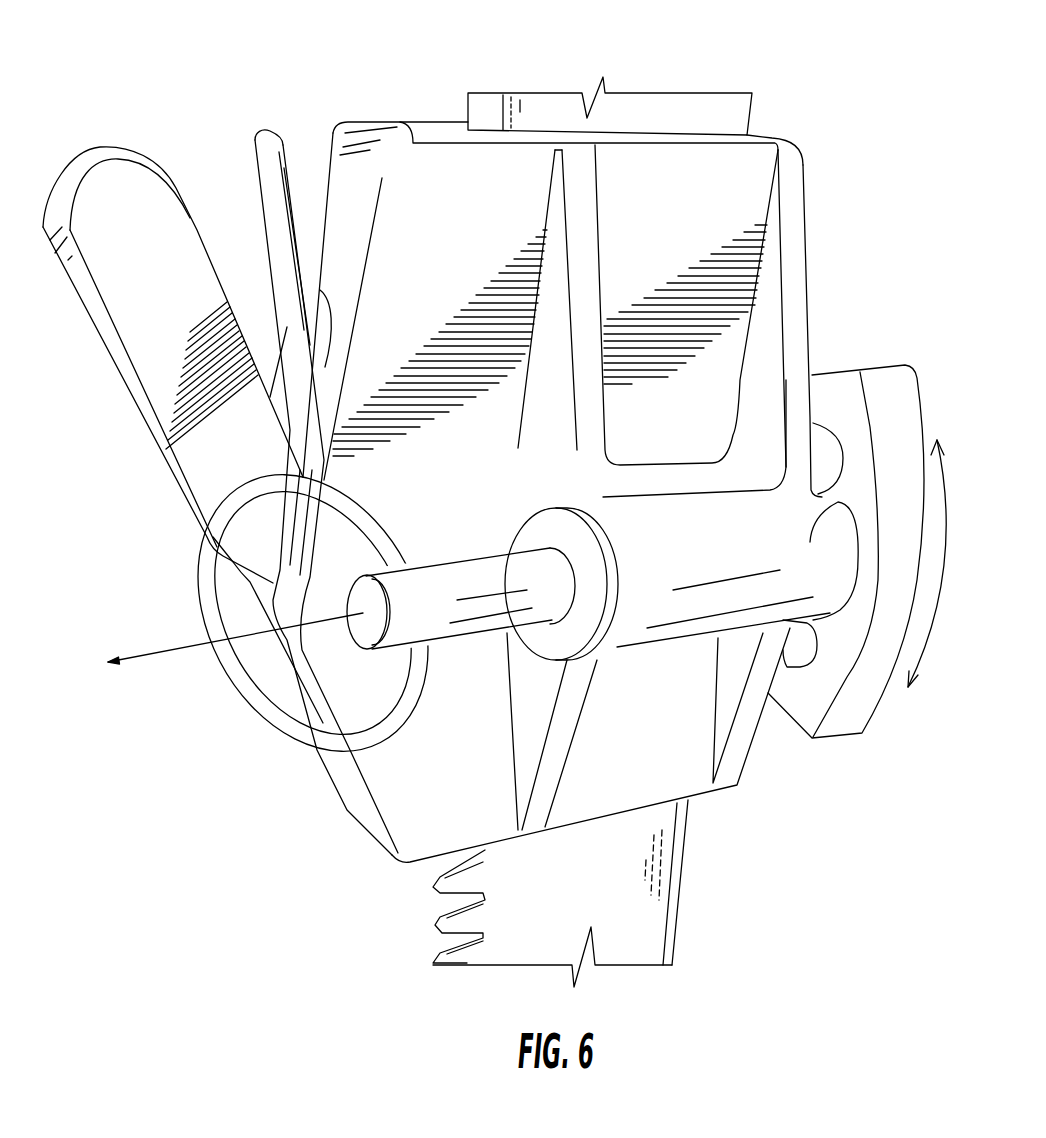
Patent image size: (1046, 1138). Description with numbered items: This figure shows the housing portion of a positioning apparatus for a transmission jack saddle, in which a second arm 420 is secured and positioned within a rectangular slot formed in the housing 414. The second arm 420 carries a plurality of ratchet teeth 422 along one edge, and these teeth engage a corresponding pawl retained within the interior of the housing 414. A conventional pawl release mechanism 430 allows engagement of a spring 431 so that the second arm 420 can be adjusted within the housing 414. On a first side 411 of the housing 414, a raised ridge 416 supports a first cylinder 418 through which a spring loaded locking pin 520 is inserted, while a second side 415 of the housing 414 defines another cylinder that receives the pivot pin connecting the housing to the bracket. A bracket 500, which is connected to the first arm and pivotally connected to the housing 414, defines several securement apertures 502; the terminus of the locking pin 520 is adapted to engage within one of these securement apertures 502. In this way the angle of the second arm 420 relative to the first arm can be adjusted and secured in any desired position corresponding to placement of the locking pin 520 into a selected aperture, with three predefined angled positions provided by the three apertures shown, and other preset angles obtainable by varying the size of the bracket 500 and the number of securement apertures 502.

The first side 411 is at (755, 163).
The housing 414 is at (407, 140).
The second side 415 is at (807, 207).
The raised ridge 416 is at (587, 358).
The first cylinder 418 is at (810, 542).
The second arm 420 is at (640, 942).
The ratchet teeth 422 is at (457, 930).
The pawl release mechanism 430 is at (73, 157).
The spring 431 is at (258, 132).
The bracket 500 is at (795, 700).
The securement apertures 502 is at (828, 420).
The locking pin 520 is at (463, 628).